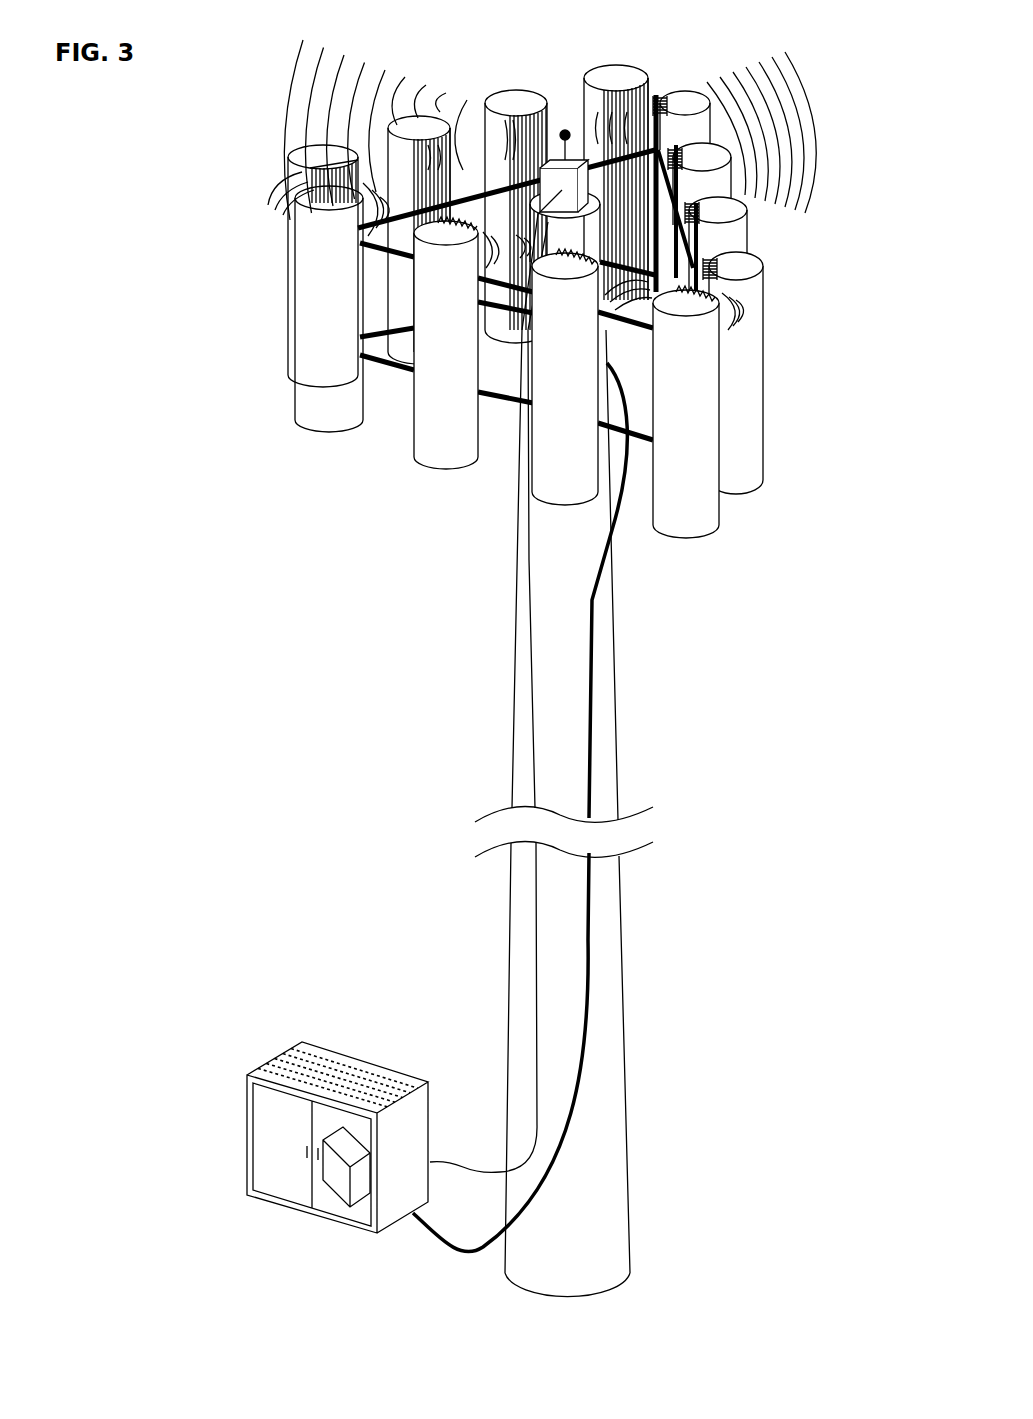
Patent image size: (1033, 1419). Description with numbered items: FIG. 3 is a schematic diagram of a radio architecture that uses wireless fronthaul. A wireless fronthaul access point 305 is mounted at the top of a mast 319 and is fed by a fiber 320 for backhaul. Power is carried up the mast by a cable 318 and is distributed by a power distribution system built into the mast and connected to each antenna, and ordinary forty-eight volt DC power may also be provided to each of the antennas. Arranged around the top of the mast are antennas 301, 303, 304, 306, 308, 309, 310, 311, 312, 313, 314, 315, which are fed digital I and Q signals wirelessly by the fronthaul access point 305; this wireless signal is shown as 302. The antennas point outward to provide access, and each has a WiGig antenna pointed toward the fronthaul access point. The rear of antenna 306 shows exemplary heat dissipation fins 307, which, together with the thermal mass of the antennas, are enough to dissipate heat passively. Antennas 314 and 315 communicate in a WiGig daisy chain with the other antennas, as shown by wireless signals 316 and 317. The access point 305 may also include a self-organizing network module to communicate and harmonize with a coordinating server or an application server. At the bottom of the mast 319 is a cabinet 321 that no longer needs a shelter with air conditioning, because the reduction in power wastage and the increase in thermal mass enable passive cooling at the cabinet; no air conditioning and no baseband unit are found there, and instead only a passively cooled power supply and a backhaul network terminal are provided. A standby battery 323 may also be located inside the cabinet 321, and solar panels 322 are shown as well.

The antenna 301 is at (287, 157).
The wireless signal 302 is at (323, 53).
The antenna 303 is at (432, 115).
The antenna 304 is at (497, 88).
The wireless fronthaul access point 305 is at (565, 128).
The antenna 306 is at (603, 60).
The heat dissipation fins 307 is at (650, 82).
The antenna 308 is at (687, 83).
The antenna 309 is at (733, 167).
The antenna 310 is at (752, 222).
The antenna 311 is at (767, 327).
The antenna 312 is at (678, 528).
The antenna 313 is at (580, 493).
The antenna 314 is at (417, 455).
The antenna 315 is at (300, 420).
The wireless signal 316 is at (380, 232).
The wireless signal 317 is at (275, 200).
The cable 318 is at (603, 960).
The mast 319 is at (635, 1240).
The fiber 320 is at (535, 1078).
The cabinet 321 is at (306, 1142).
The solar panels 322 is at (273, 1048).
The standby battery 323 is at (358, 1208).